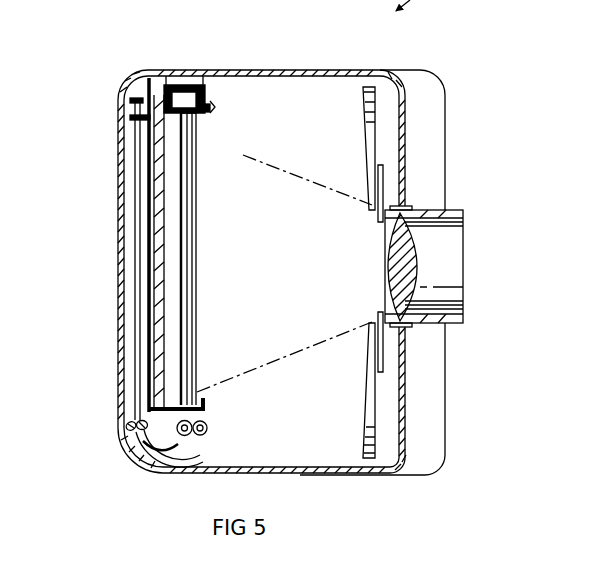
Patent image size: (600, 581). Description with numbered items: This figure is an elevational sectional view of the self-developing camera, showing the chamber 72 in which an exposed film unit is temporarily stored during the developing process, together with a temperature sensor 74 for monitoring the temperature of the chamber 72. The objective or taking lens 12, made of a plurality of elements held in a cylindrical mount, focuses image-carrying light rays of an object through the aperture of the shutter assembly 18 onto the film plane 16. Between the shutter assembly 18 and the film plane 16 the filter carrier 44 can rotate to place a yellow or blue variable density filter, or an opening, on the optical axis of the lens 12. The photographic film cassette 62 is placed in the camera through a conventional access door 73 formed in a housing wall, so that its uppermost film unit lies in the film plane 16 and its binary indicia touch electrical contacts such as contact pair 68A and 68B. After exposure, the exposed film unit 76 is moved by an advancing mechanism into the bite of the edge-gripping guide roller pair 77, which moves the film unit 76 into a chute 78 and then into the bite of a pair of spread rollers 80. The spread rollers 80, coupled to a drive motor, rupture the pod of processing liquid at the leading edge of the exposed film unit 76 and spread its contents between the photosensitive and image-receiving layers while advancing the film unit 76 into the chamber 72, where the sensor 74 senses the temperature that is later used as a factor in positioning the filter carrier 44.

The objective or taking lens 12 is at (470, 186).
The film plane 16 is at (196, 158).
The shutter assembly 18 is at (383, 178).
The filter carrier 44 is at (369, 86).
The photographic film cassette 62 is at (171, 85).
The electrical contact 68A is at (255, 74).
The electrical contact 68B is at (214, 90).
The chamber 72 is at (135, 150).
The access door 73 is at (121, 218).
The temperature sensor 74 is at (145, 76).
The exposed film unit 76 is at (150, 367).
The edge-gripping guide roller pair 77 is at (211, 430).
The chute 78 is at (158, 464).
The spread rollers 80 is at (133, 417).